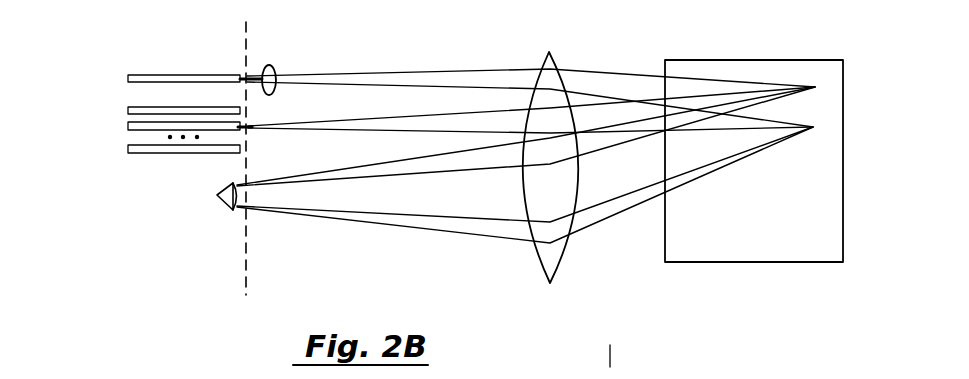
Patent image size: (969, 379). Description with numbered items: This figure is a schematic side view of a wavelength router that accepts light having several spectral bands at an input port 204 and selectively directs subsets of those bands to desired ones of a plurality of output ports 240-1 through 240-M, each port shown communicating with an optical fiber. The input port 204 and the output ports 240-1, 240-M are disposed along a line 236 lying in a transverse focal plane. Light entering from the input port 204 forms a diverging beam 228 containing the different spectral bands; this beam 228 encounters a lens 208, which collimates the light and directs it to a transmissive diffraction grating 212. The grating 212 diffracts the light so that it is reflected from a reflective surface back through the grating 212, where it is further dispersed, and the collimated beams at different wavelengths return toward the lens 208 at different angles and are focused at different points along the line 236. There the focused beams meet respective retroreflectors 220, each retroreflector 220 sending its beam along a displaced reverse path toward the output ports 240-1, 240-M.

The input port 204 is at (192, 74).
The output port 240-1 is at (157, 107).
The output port 240-M is at (185, 153).
The diverging beam 228 is at (275, 68).
The retroreflector 220 is at (228, 206).
The line 236 is at (246, 295).
The lens 208 is at (538, 258).
The transmissive diffraction grating 212 is at (783, 262).